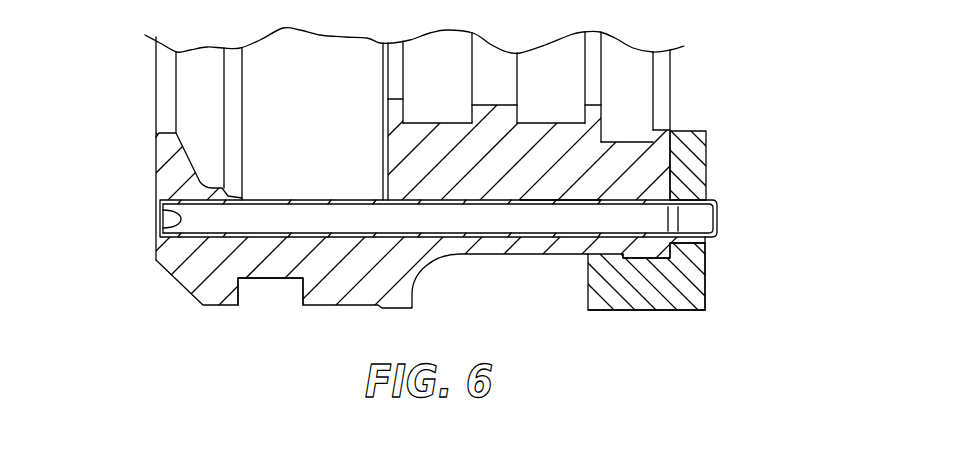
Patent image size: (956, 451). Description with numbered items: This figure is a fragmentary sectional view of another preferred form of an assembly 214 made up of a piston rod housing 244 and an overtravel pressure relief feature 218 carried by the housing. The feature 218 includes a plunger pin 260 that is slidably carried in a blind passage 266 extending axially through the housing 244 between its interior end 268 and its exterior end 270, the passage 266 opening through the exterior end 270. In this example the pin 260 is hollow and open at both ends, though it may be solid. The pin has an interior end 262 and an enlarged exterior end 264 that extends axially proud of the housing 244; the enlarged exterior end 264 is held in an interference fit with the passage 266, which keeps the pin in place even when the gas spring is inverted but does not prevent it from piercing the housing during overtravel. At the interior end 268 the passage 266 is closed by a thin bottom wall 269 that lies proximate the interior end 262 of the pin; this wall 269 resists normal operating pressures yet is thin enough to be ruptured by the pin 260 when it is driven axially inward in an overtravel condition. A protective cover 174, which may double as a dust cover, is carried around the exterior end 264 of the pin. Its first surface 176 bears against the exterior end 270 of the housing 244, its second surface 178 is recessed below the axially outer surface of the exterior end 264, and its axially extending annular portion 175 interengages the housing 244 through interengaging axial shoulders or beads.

The protective cover 174 is at (706, 330).
The axially extending annular portion 175 is at (615, 303).
The first surface 176 is at (670, 141).
The second surface 178 is at (706, 273).
The assembly 214 is at (155, 360).
The overtravel pressure relief feature 218 is at (790, 206).
The piston rod housing 244 is at (301, 359).
The plunger pin 260 is at (495, 255).
The interior end 262 is at (187, 227).
The exterior end 264 is at (720, 222).
The blind passage 266 is at (558, 205).
The interior end 268 is at (155, 185).
The bottom wall 269 is at (158, 218).
The exterior end 270 is at (682, 173).